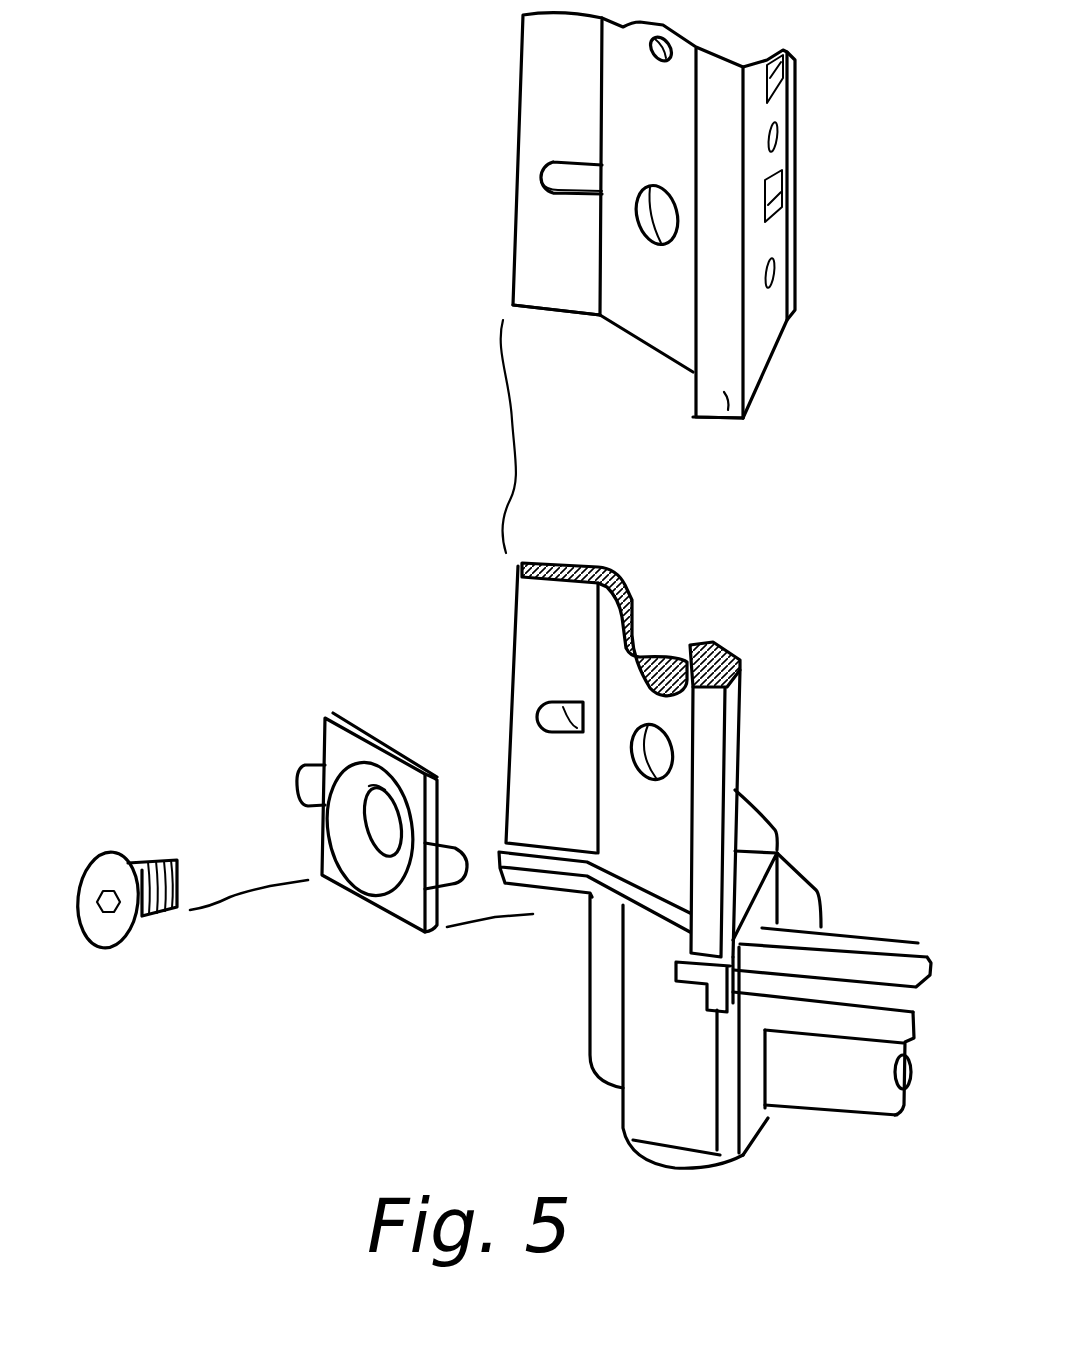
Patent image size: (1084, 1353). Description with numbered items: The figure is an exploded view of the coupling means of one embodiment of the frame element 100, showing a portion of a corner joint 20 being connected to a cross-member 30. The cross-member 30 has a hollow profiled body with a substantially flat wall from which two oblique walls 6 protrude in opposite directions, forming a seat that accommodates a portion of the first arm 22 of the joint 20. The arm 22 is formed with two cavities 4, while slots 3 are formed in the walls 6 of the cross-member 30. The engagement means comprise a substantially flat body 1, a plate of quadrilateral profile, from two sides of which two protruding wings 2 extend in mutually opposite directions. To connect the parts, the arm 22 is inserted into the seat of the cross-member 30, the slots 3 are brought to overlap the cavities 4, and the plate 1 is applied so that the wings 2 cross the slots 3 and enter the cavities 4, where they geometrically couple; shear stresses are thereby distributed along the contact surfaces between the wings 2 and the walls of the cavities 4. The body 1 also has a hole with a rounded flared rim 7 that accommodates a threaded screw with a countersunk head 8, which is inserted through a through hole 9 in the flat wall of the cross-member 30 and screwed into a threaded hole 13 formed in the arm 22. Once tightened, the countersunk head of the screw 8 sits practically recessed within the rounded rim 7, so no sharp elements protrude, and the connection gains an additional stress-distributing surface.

The frame element 100 is at (317, 663).
The cross-member 30 is at (808, 209).
The corner joint 20 is at (741, 718).
The first arm 22 is at (680, 652).
The slot 3 is at (548, 173).
The cavity 4 is at (543, 707).
The oblique wall 6 is at (563, 292).
The through hole 9 is at (662, 244).
The threaded hole 13 is at (655, 778).
The flat body 1 is at (410, 915).
The protruding wing 2 is at (308, 767).
The rounded flared rim 7 is at (367, 877).
The threaded screw with countersunk head 8 is at (160, 857).